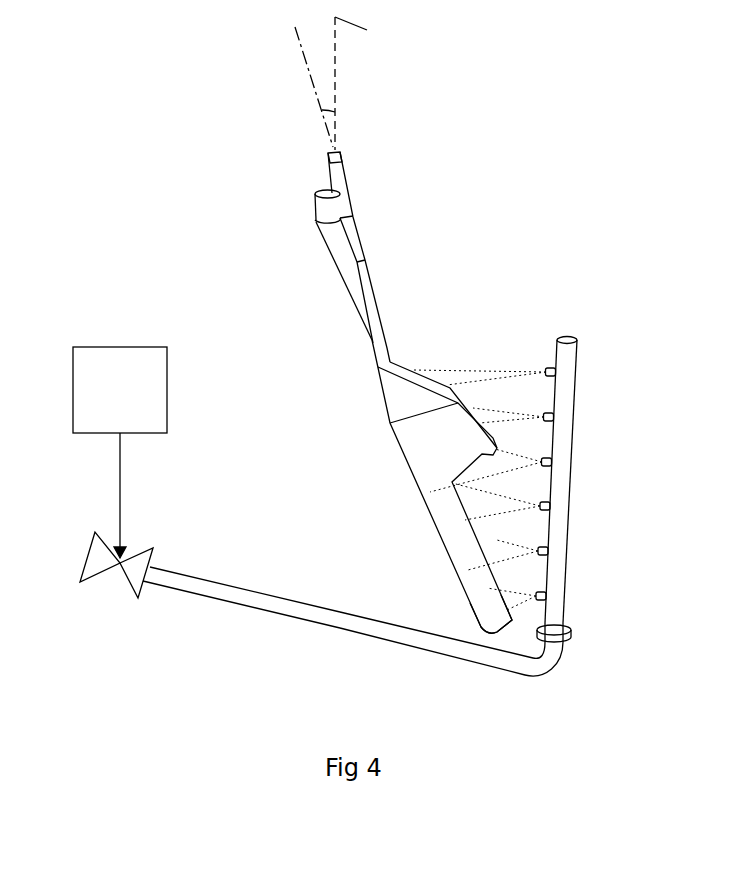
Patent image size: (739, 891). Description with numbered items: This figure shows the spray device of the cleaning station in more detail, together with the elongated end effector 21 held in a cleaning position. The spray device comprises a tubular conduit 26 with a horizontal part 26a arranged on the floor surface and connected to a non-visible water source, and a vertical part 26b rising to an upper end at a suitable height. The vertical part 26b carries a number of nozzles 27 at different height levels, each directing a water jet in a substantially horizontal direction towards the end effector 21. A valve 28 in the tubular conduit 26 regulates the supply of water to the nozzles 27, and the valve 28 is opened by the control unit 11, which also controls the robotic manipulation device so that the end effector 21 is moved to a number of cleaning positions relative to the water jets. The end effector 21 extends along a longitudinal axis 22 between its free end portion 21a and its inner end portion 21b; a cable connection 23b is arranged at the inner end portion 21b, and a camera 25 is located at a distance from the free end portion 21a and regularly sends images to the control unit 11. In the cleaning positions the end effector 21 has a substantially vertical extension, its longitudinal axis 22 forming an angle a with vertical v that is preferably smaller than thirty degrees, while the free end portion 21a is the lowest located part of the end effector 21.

The control unit 11 is at (107, 375).
The end effector 21 is at (313, 333).
The free end portion 21a is at (500, 632).
The inner end portion 21b is at (341, 155).
The longitudinal axis 22 is at (305, 62).
The cable connection 23b is at (333, 208).
The camera 25 is at (453, 448).
The tubular conduit 26 is at (223, 590).
The horizontal part 26a is at (315, 615).
The vertical part 26b is at (562, 483).
The nozzles 27 is at (554, 417).
The valve 28 is at (98, 558).
The angle a is at (333, 110).
The vertical v is at (363, 83).